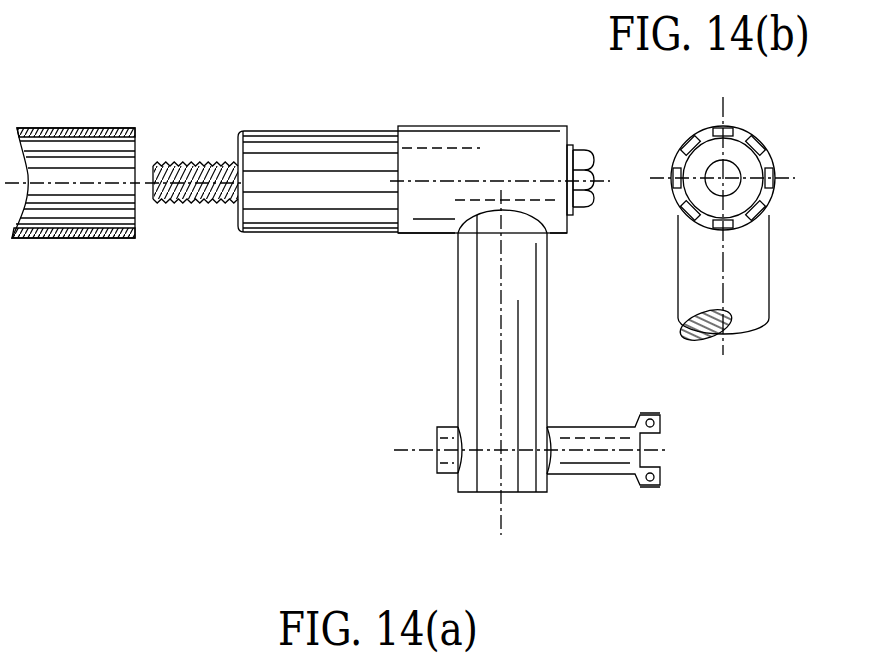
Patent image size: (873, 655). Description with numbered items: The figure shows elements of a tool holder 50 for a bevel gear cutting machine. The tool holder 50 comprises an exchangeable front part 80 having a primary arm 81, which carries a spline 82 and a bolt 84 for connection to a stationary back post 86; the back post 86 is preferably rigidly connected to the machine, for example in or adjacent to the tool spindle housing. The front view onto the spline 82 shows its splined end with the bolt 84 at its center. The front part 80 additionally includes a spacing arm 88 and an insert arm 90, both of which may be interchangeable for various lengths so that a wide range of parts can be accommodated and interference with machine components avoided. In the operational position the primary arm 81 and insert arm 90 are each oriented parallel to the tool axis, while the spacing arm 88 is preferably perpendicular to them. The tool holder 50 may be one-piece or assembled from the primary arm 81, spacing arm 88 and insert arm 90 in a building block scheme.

In FIG. 14A, the tool holder 50 is at (318, 365).
In FIG. 14A, the exchangeable front part 80 is at (420, 127).
In FIG. 14A, the primary arm 81 is at (510, 140).
In FIG. 14A, the spline 82 is at (305, 220).
In FIG. 14B, the spline 82 is at (693, 148).
In FIG. 14A, the bolt 84 is at (188, 210).
In FIG. 14B, the bolt 84 is at (715, 188).
In FIG. 14A, the stationary back post 86 is at (80, 127).
In FIG. 14A, the spacing arm 88 is at (470, 347).
In FIG. 14B, the spacing arm 88 is at (693, 278).
In FIG. 14A, the insert arm 90 is at (590, 460).